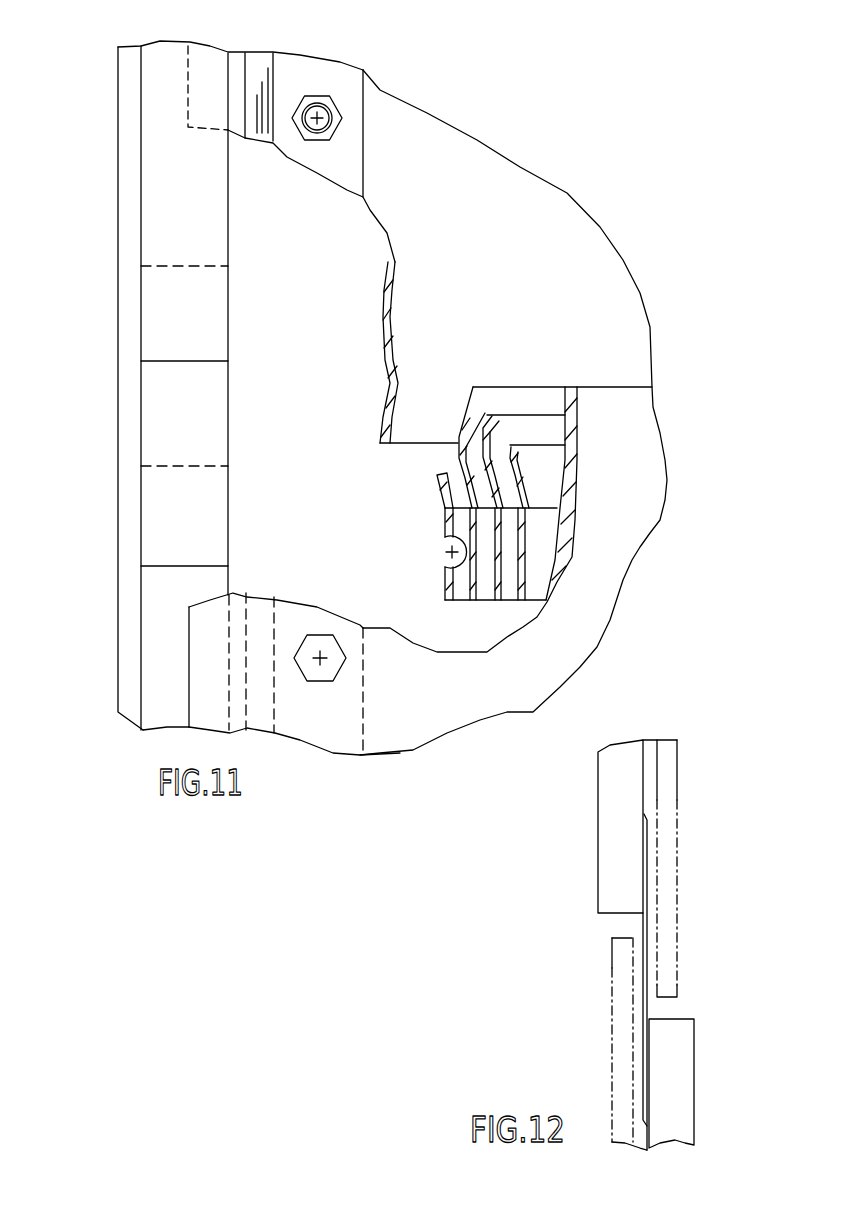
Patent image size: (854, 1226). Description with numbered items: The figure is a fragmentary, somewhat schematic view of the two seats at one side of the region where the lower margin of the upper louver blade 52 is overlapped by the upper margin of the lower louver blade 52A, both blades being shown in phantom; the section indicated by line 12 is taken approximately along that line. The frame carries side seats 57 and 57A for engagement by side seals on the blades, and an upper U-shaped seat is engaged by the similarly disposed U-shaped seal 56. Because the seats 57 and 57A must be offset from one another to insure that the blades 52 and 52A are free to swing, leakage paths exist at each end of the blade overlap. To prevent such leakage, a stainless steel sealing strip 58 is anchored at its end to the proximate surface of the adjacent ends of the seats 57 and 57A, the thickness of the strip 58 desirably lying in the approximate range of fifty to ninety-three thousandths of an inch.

In FIG. 11, the upper louver blade 52 is at (575, 240).
In FIG. 12, the upper louver blade 52 is at (665, 848).
In FIG. 12, the lower louver blade 52A is at (622, 970).
In FIG. 11, the U-shaped seal 56 is at (345, 153).
In FIG. 11, the side seat 57 is at (162, 130).
In FIG. 12, the side seat 57 is at (615, 825).
In FIG. 11, the side seat 57A is at (187, 582).
In FIG. 12, the side seat 57A is at (675, 1095).
In FIG. 11, the sealing strip 58 is at (213, 418).
In FIG. 12, the sealing strip 58 is at (645, 1055).
In FIG. 11, the section line 12- 12 is at (309, 298).